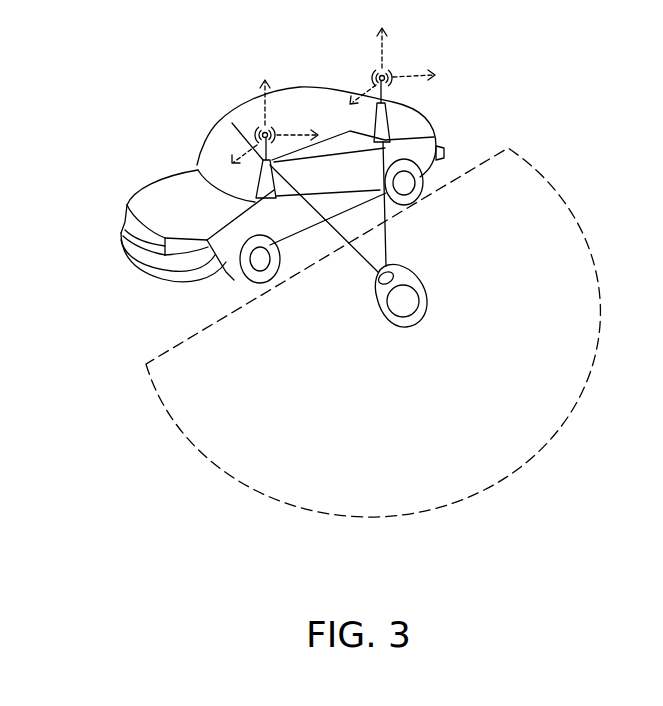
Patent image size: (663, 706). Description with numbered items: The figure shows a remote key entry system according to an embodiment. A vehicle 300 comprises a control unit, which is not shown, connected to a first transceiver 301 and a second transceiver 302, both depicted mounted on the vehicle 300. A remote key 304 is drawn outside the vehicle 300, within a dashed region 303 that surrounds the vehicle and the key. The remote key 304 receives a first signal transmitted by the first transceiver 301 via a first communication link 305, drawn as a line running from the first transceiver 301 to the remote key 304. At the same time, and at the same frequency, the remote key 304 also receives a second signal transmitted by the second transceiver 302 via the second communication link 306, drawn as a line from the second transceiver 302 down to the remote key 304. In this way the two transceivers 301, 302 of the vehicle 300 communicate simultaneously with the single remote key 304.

The vehicle 300 is at (150, 188).
The first transceiver 301 is at (250, 186).
The second transceiver 302 is at (408, 108).
The communication range 303 is at (210, 464).
The remote key 304 is at (435, 315).
The first communication link 305 is at (367, 265).
The second communication link 306 is at (390, 243).